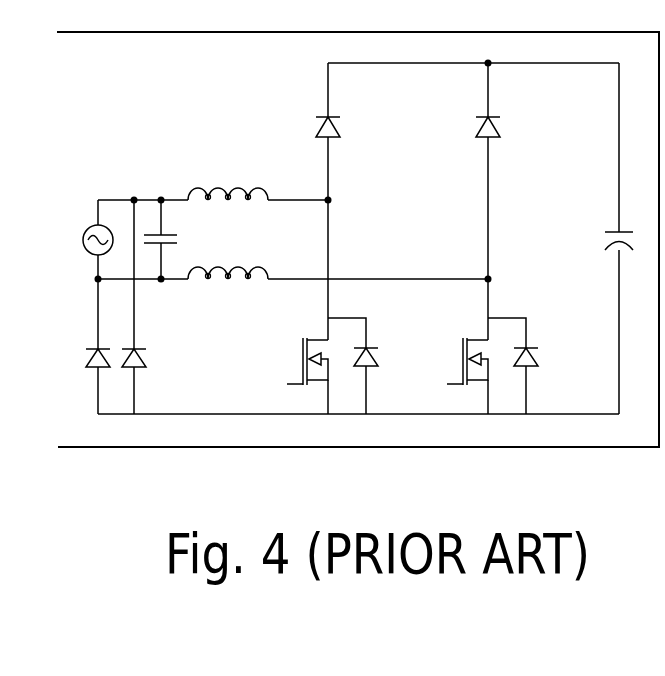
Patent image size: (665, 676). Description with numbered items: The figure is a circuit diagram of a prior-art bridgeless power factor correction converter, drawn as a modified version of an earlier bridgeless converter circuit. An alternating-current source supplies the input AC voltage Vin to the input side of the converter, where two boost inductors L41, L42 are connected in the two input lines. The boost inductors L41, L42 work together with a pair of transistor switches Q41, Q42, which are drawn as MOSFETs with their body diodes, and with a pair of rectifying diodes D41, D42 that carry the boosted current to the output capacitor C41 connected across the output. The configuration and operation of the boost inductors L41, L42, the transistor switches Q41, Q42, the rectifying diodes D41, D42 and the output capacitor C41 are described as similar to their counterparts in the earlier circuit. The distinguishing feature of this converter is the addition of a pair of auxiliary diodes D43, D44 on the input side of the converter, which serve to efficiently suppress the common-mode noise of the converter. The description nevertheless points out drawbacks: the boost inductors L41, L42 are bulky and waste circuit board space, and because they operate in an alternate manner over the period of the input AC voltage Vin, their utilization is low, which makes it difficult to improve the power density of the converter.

The input AC voltage Vin is at (75, 239).
The boost inductor L41 is at (228, 176).
The boost inductor L42 is at (228, 255).
The rectifying diode D41 is at (355, 130).
The rectifying diode D42 is at (515, 130).
The auxiliary diode D43 is at (70, 365).
The auxiliary diode D44 is at (158, 365).
The output capacitor C41 is at (594, 242).
The transistor switch Q41 is at (310, 376).
The transistor switch Q42 is at (470, 376).